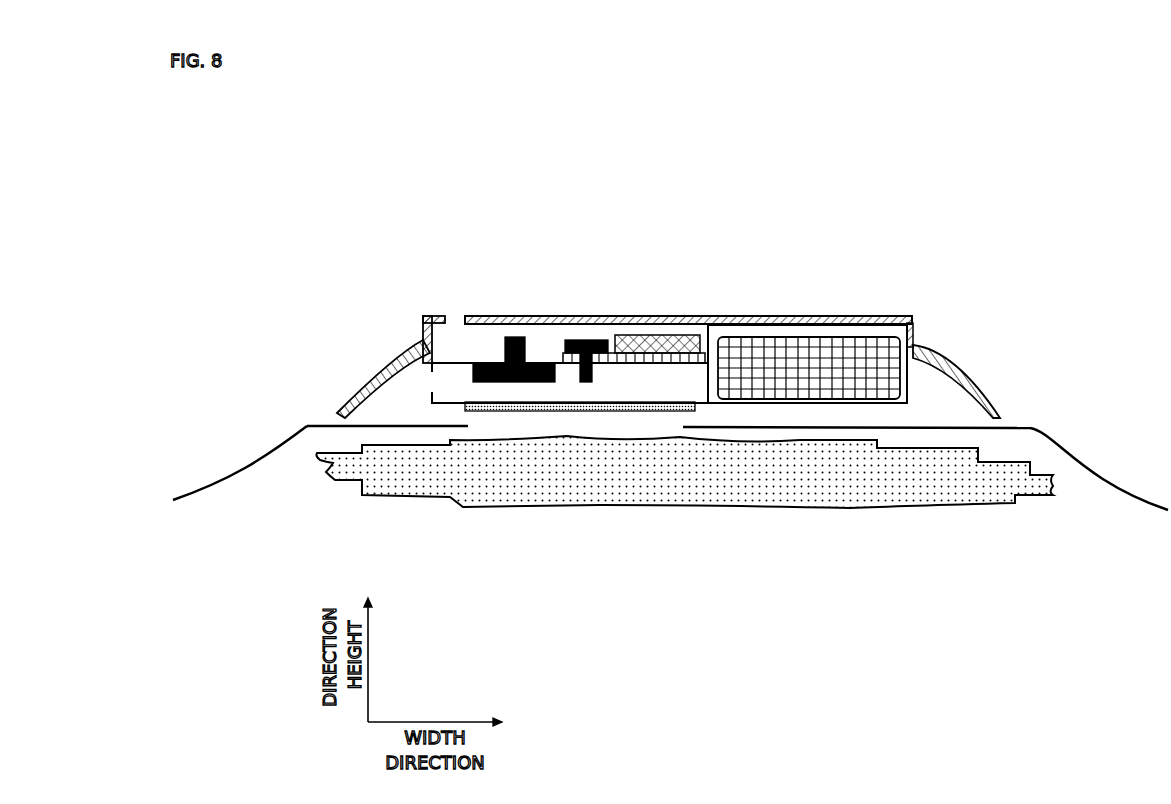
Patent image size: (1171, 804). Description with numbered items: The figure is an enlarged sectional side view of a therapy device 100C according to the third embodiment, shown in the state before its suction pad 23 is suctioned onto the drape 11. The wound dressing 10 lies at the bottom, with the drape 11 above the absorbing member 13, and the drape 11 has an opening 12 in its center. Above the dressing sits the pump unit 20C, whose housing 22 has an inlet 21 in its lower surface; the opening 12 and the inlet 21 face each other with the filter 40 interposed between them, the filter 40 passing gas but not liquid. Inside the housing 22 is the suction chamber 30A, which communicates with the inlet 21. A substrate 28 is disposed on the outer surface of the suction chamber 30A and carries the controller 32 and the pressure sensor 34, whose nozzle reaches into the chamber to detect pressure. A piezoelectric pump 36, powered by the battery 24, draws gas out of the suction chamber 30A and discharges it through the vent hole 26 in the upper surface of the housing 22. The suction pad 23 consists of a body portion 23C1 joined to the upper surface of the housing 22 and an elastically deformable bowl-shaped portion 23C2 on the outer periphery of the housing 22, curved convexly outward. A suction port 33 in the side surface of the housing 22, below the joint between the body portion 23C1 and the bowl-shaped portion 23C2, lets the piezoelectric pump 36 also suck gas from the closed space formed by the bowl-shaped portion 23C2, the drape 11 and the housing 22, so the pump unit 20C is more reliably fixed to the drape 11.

The wound dressing 10 is at (1061, 632).
The drape 11 is at (1112, 497).
The opening 12 is at (633, 434).
The absorbing member 13 is at (972, 495).
The therapy device 100C is at (1020, 158).
The pump unit 20C is at (865, 155).
The suction pad 23 is at (902, 218).
The body portion 23C1 is at (850, 320).
The bowl-shaped portion 23C2 is at (398, 348).
The housing 22 is at (910, 372).
The battery 24 is at (797, 355).
The vent hole 26 is at (458, 300).
The inlet 21 is at (613, 392).
The substrate 28 is at (706, 358).
The suction chamber 30A is at (696, 387).
The controller 32 is at (693, 336).
The suction port 33 is at (425, 382).
The pressure sensor 34 is at (599, 340).
The piezoelectric pump 36 is at (527, 338).
The filter 40 is at (541, 412).